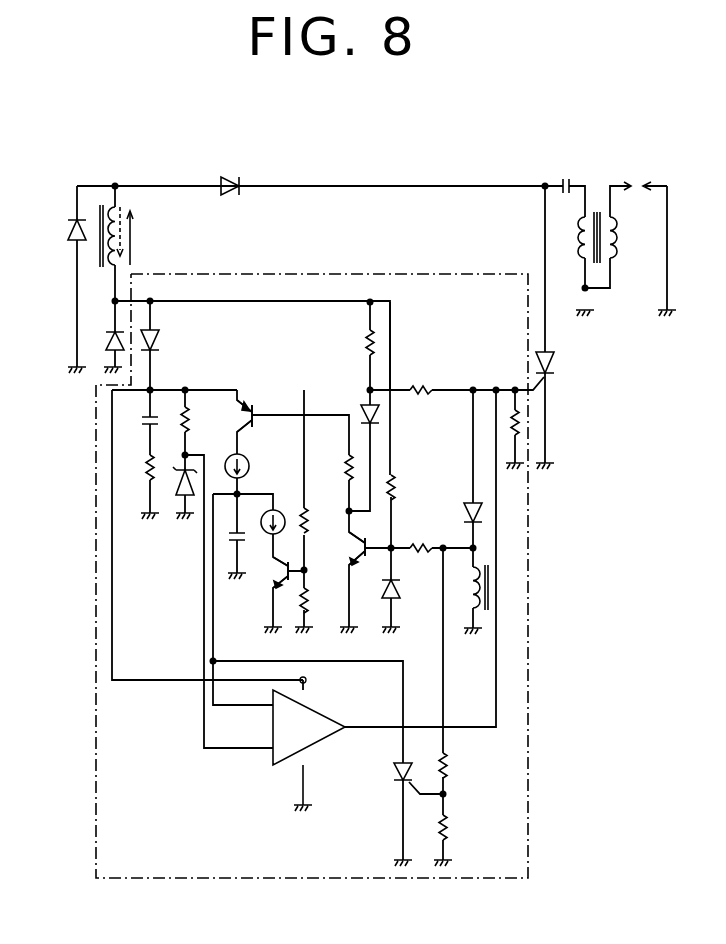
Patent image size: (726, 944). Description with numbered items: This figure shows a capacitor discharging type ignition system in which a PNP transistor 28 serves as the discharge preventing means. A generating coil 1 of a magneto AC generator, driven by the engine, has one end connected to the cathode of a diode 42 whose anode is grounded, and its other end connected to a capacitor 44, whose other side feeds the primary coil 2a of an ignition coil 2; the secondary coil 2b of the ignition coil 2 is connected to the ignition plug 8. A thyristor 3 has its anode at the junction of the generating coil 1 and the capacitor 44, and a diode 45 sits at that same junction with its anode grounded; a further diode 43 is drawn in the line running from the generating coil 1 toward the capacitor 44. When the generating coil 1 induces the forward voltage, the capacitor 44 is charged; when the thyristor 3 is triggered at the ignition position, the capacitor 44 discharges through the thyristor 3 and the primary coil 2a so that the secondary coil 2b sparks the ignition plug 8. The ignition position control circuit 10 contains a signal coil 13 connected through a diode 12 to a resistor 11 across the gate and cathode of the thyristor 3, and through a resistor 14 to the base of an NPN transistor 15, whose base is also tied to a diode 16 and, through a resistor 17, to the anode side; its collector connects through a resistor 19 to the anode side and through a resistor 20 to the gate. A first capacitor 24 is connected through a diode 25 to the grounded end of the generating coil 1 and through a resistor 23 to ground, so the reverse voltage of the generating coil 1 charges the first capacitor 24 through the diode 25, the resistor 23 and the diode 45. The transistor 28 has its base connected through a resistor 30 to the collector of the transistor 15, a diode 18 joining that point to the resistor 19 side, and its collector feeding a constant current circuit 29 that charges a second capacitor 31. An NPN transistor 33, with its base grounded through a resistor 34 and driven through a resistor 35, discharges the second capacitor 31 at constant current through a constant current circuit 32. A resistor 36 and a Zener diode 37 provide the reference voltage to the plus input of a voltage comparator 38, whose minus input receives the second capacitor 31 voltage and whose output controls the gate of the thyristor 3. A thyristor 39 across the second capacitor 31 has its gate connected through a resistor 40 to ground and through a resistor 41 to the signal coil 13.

The generating coil 1 is at (111, 207).
The ignition coil 2 is at (605, 213).
The primary coil 2a is at (584, 240).
The secondary coil 2b is at (612, 237).
The thyristor 3 is at (556, 361).
The ignition plug 8 is at (644, 184).
The ignition position control circuit 10 is at (344, 272).
The resistor 11 is at (520, 425).
The diode 12 is at (467, 507).
The signal coil 13 is at (471, 592).
The resistor 14 is at (419, 542).
The NPN transistor 15 is at (347, 551).
The diode 16 is at (400, 596).
The resistor 17 is at (396, 490).
The diode 18 is at (384, 412).
The resistor 19 is at (362, 343).
The resistor 20 is at (424, 388).
The resistor 23 is at (144, 474).
The first capacitor 24 is at (143, 420).
The diode 25 is at (160, 347).
The PNP transistor 28 is at (250, 405).
The constant current circuit 29 is at (226, 460).
The resistor 30 is at (345, 466).
The second capacitor 31 is at (232, 537).
The constant current circuit 32 is at (275, 509).
The NPN transistor 33 is at (268, 577).
The resistor 34 is at (310, 595).
The resistor 35 is at (308, 522).
The resistor 36 is at (190, 410).
The Zener diode 37 is at (180, 490).
The voltage comparator 38 is at (331, 745).
The thyristor 39 is at (399, 778).
The resistor 40 is at (452, 830).
The resistor 41 is at (452, 768).
The diode 42 is at (104, 350).
The diode 43 is at (240, 180).
The capacitor 44 is at (562, 178).
The diode 45 is at (70, 230).